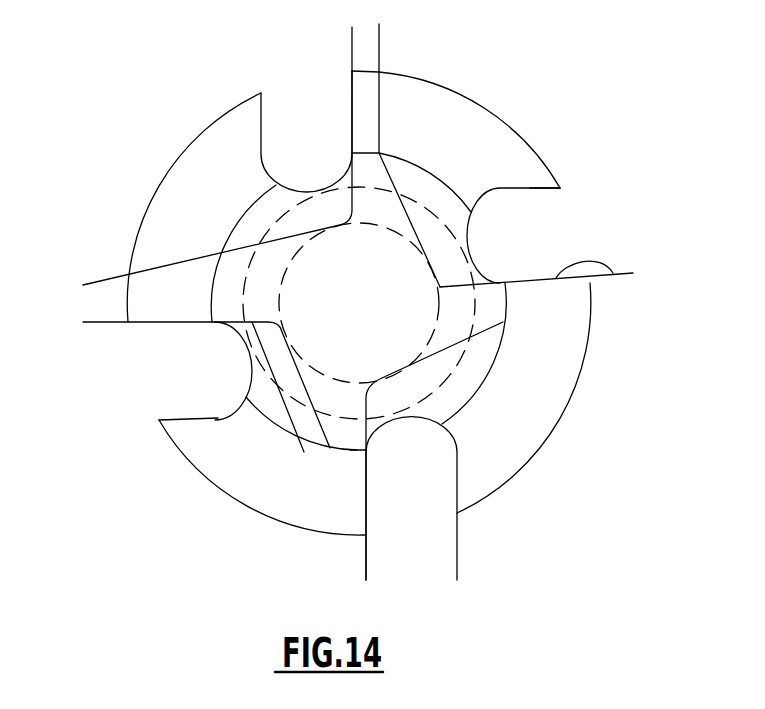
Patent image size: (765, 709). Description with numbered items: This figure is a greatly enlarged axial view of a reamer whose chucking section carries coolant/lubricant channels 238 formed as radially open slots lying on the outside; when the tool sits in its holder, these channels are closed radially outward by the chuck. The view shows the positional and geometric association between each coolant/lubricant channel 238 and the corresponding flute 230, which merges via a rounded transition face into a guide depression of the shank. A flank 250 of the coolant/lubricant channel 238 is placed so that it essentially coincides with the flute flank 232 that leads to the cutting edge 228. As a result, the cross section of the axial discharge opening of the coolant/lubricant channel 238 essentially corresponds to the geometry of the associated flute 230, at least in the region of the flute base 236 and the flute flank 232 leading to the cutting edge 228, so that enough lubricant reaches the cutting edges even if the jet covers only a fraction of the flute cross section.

The cutting edge 228 is at (208, 327).
The flute 230 is at (231, 209).
The flute flank 232 is at (304, 452).
The flute base 236 is at (440, 287).
The coolant/lubricant channel 238 is at (570, 223).
The flank of the coolant/lubricant channel 250 is at (613, 273).